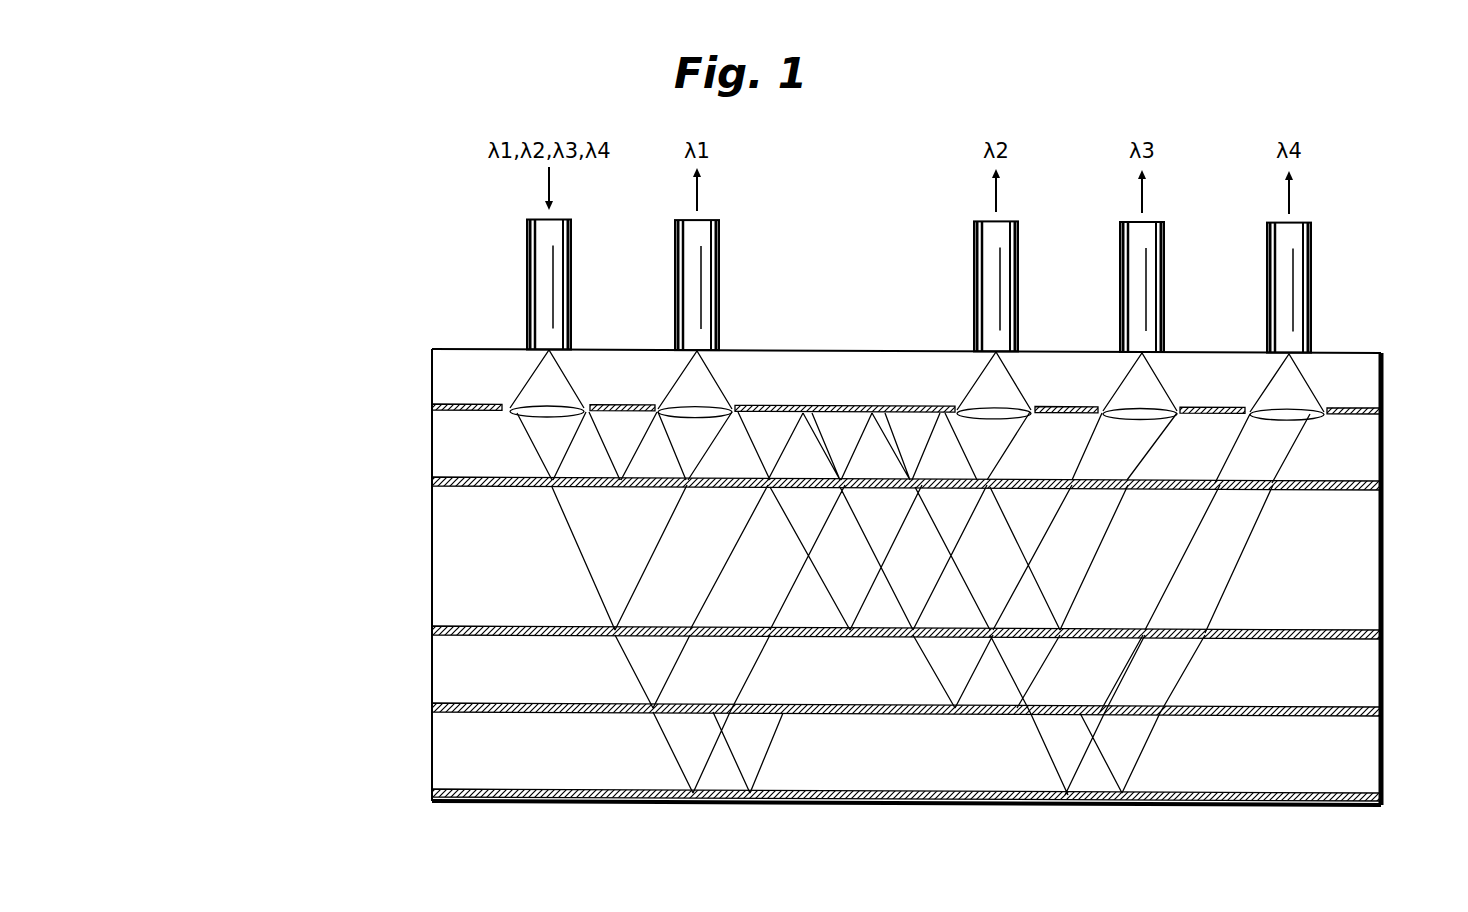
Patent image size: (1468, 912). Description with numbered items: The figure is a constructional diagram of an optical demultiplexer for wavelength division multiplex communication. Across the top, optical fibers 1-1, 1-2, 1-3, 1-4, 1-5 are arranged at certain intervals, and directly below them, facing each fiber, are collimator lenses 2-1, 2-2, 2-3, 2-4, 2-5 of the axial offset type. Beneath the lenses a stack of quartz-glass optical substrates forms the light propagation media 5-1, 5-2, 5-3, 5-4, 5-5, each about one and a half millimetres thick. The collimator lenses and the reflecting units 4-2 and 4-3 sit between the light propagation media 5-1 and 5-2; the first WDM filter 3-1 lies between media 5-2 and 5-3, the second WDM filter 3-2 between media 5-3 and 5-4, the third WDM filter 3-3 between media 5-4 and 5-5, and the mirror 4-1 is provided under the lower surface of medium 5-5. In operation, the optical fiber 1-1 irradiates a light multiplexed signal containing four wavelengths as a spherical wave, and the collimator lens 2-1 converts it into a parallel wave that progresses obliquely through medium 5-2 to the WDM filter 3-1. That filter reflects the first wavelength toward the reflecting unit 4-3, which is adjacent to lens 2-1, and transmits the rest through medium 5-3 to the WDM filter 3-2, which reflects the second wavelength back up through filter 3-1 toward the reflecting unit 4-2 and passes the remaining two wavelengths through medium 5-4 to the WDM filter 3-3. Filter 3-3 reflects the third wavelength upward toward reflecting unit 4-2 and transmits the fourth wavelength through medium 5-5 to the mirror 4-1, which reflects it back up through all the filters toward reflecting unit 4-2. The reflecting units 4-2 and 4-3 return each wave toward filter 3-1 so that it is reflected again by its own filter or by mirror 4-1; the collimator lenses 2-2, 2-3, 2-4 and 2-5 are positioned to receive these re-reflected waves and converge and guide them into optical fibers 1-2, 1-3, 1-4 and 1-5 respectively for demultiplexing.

The optical fiber 1-1 is at (535, 283).
The optical fiber 1-2 is at (688, 297).
The optical fiber 1-3 is at (985, 287).
The optical fiber 1-4 is at (1135, 277).
The optical fiber 1-5 is at (1280, 283).
The collimator lens of axial offset type 2-1 is at (535, 405).
The collimator lens of axial offset type 2-2 is at (690, 411).
The collimator lens of axial offset type 2-3 is at (990, 411).
The collimator lens of axial offset type 2-4 is at (1133, 411).
The collimator lens of axial offset type 2-5 is at (1282, 411).
The WDM filter (λ1) 3-1 is at (490, 481).
The WDM filter (λ2) 3-2 is at (490, 630).
The WDM filter (λ3) 3-3 is at (490, 706).
The mirror 4-1 is at (490, 792).
The reflecting unit 4-2 is at (770, 407).
The reflecting unit 4-3 is at (592, 406).
The light propagation medium 5-1 is at (1343, 372).
The light propagation medium 5-2 is at (1357, 464).
The light propagation medium 5-3 is at (1350, 586).
The light propagation medium 5-4 is at (1350, 690).
The light propagation medium 5-5 is at (1355, 768).